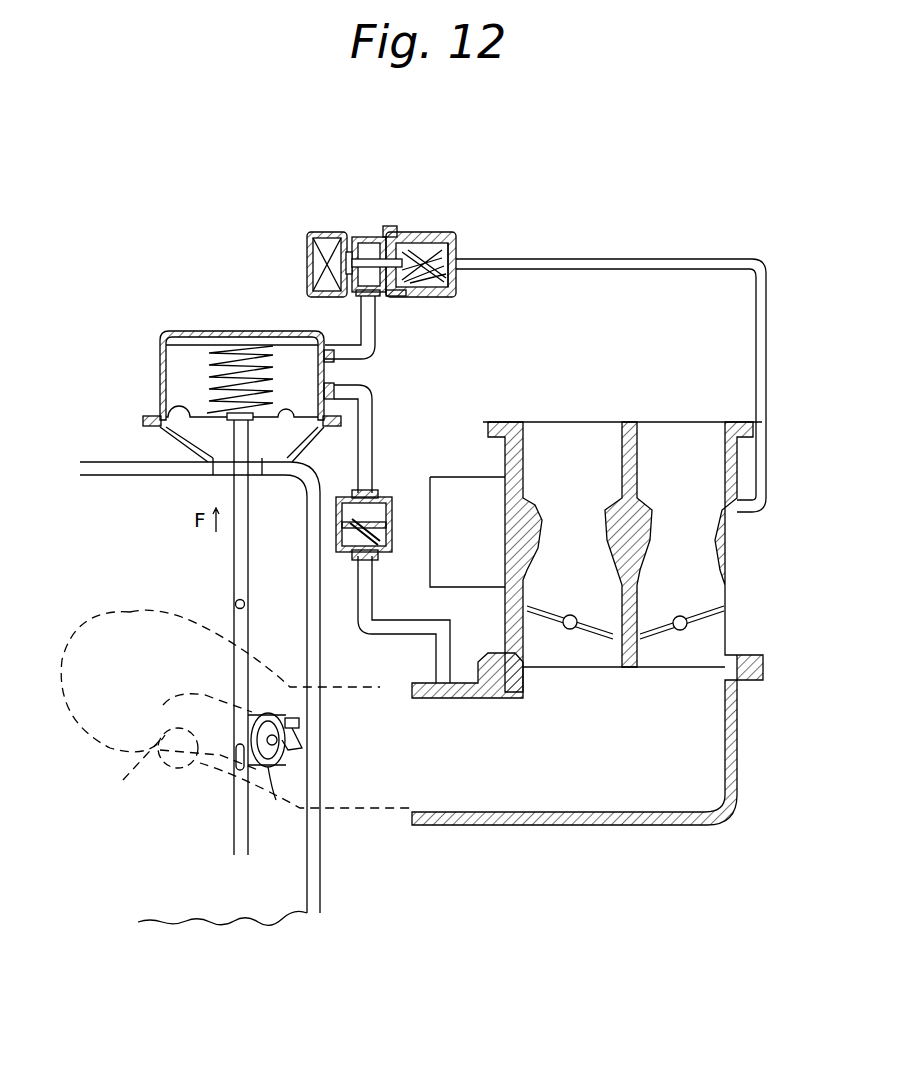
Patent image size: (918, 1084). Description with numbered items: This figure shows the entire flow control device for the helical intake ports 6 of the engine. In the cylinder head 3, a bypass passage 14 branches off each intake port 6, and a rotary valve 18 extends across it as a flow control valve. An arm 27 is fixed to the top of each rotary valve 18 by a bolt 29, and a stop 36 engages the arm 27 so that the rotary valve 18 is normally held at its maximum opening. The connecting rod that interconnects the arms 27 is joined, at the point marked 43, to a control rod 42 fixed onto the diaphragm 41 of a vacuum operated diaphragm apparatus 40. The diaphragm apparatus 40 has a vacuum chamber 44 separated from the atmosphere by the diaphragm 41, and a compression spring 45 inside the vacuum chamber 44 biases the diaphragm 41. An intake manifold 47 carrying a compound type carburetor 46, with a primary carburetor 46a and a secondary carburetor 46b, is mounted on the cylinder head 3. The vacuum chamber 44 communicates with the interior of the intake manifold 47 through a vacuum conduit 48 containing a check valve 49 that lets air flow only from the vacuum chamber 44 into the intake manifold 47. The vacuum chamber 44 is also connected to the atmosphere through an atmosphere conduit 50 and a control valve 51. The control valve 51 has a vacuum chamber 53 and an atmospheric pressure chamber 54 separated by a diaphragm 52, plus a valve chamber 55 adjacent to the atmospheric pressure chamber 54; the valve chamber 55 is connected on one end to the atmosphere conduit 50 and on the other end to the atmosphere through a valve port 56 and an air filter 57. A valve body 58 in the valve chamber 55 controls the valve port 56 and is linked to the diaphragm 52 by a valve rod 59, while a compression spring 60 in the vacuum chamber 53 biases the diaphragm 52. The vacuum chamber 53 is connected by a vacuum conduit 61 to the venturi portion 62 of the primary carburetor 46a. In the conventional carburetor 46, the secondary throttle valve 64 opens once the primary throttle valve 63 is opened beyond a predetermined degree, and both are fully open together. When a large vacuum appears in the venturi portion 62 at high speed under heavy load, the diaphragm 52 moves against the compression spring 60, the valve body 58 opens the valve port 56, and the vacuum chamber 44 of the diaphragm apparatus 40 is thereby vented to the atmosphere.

The cylinder head 3 is at (287, 910).
The intake port 6 is at (142, 608).
The bypass passage 14 is at (178, 751).
The rotary valve 18 is at (178, 755).
The arm 27 is at (276, 800).
The bolt 29 is at (286, 715).
The stop 36 is at (298, 716).
The vacuum operated diaphragm apparatus 40 is at (172, 334).
The diaphragm 41 is at (162, 398).
The control rod 42 is at (249, 523).
The pin 43 is at (246, 615).
The vacuum chamber 44 is at (247, 340).
The compression spring 45 is at (210, 352).
The compound type carburetor 46 is at (482, 420).
The primary bore 46a is at (677, 420).
The secondary bore 46b is at (570, 420).
The intake manifold 47 is at (548, 826).
The vacuum conduit 48 is at (373, 440).
The check valve 49 is at (386, 512).
The atmosphere conduit 50 is at (378, 350).
The control valve 51 is at (352, 224).
The diaphragm 52 is at (425, 235).
The vacuum chamber 53 is at (440, 233).
The atmospheric pressure chamber 54 is at (397, 243).
The valve chamber 55 is at (364, 243).
The valve port 56 is at (340, 238).
The air filter 57 is at (311, 262).
The valve body 58 is at (358, 293).
The valve rod 59 is at (396, 295).
The compression spring 60 is at (440, 292).
The vacuum conduit 61 is at (598, 259).
The venturi portion 62 is at (682, 500).
The primary throttle valve 63 is at (698, 620).
The secondary throttle valve 64 is at (592, 620).